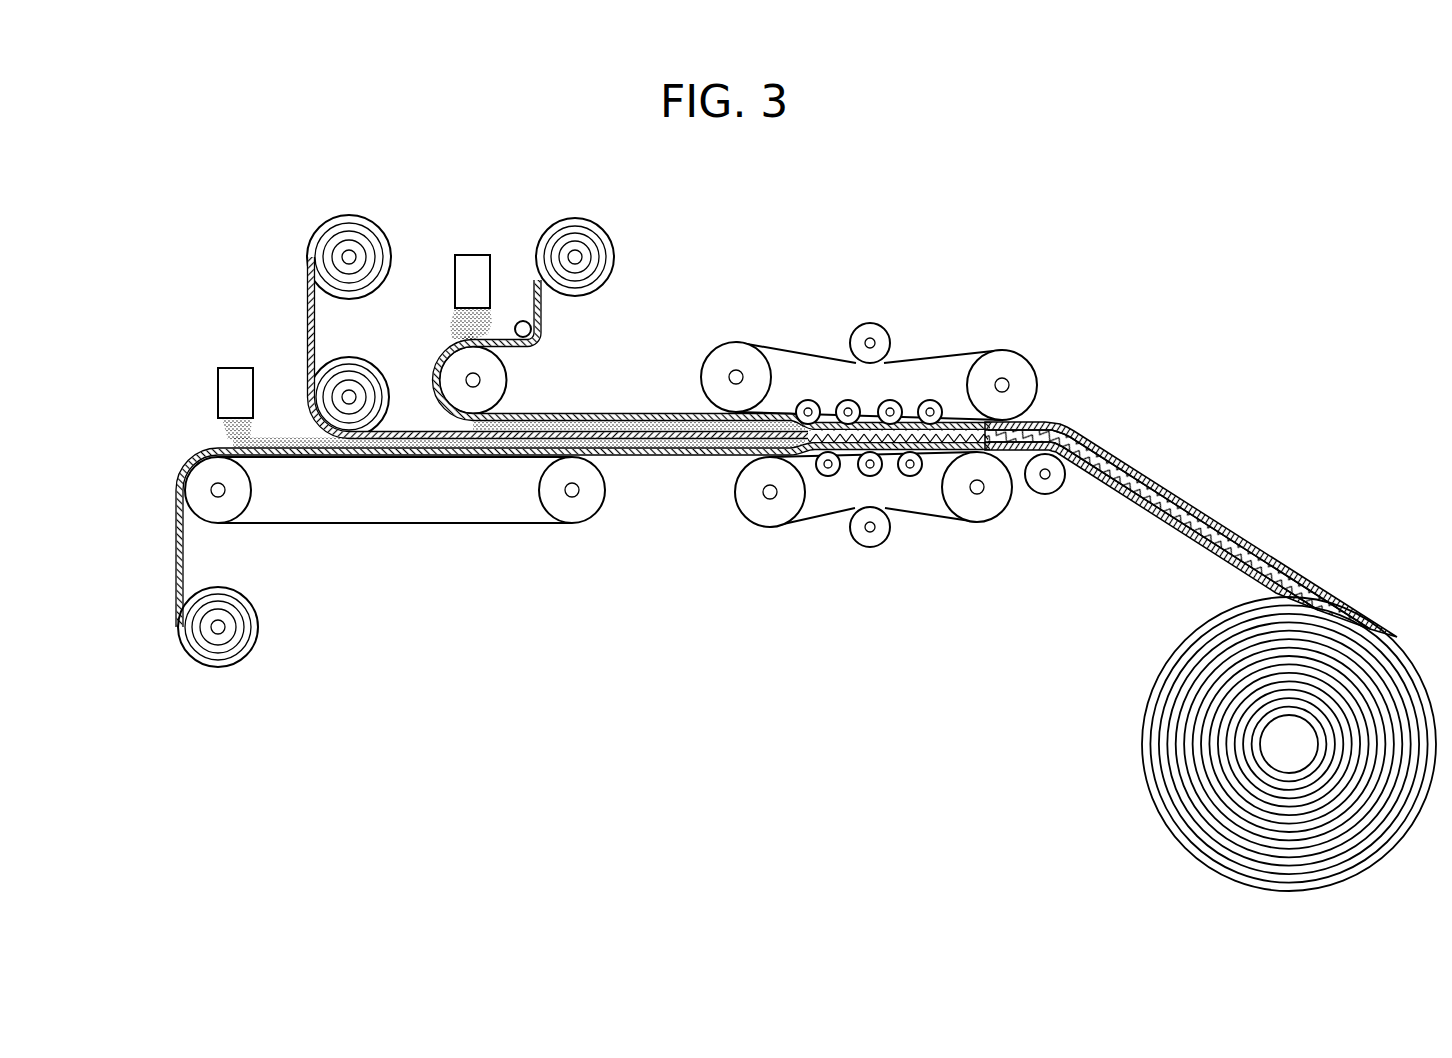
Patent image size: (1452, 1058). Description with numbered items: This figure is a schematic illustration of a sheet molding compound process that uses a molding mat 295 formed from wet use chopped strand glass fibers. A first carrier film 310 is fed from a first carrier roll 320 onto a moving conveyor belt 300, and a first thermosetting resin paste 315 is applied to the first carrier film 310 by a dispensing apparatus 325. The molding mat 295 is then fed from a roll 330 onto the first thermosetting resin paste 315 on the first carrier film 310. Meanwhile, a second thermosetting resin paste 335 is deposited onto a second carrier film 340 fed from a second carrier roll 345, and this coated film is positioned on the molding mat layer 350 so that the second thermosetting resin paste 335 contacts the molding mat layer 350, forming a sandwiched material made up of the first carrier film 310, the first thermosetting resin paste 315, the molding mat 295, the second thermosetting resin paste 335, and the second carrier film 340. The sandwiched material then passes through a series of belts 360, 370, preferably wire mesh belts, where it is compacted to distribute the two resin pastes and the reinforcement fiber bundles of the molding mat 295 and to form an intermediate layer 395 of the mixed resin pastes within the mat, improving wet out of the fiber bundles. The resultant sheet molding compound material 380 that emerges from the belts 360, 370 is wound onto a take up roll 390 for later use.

The molding mat 295 is at (306, 314).
The conveyor belt 300 is at (385, 525).
The first carrier film 310 is at (184, 551).
The first thermosetting resin paste 315 is at (206, 434).
The first carrier roll 320 is at (259, 629).
The dispensing apparatus 325 is at (477, 255).
The roll 330 is at (349, 215).
The second thermosetting resin paste 335 is at (447, 319).
The second carrier film 340 is at (545, 308).
The second carrier roll 345 is at (614, 242).
The molding mat layer 350 is at (415, 428).
The belt 360 is at (937, 350).
The belt 370 is at (927, 516).
The sheet molding compound material 380 is at (1219, 492).
The take up roll 390 is at (1143, 736).
The intermediate layer 395 is at (1168, 492).